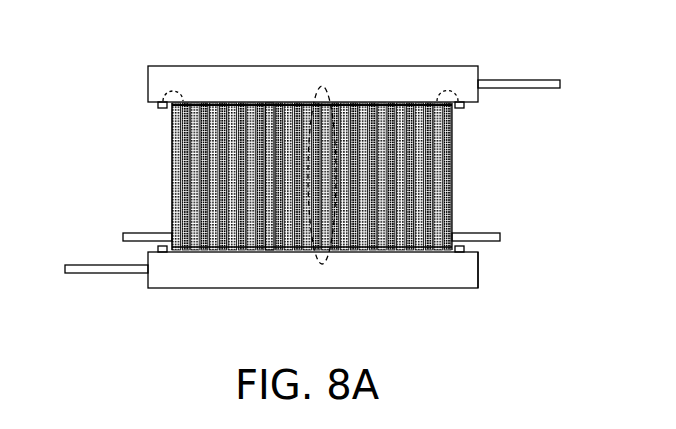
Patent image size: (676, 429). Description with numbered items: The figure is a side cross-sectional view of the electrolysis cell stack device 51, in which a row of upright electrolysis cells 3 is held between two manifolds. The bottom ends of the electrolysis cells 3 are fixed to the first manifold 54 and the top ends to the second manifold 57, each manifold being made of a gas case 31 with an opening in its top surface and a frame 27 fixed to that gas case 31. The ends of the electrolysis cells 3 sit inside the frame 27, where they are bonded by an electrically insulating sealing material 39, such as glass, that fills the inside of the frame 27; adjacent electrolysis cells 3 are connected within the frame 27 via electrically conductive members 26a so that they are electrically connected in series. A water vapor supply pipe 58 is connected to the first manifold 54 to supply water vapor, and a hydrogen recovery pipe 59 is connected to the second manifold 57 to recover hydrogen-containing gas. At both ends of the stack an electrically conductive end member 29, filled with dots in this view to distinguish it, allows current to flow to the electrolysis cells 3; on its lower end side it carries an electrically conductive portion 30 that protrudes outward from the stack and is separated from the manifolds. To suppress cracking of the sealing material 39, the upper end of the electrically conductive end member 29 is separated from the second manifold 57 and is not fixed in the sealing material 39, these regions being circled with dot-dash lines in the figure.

The electrolysis cell stack device 51 is at (152, 27).
The second manifold 57 is at (149, 67).
The electrically conductive member 26a is at (263, 115).
The electrolysis cell 3 is at (362, 100).
The hydrogen recovery pipe 59 is at (515, 83).
The electrically conductive end member 29 is at (173, 162).
The electrically conductive portion 30 is at (148, 238).
The water vapor supply pipe 58 is at (83, 272).
The frame 27 is at (162, 253).
The gas case 31 is at (252, 277).
The sealing material 39 is at (355, 252).
The first manifold 54 is at (478, 275).